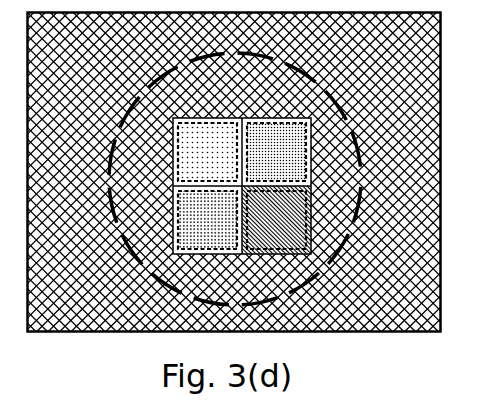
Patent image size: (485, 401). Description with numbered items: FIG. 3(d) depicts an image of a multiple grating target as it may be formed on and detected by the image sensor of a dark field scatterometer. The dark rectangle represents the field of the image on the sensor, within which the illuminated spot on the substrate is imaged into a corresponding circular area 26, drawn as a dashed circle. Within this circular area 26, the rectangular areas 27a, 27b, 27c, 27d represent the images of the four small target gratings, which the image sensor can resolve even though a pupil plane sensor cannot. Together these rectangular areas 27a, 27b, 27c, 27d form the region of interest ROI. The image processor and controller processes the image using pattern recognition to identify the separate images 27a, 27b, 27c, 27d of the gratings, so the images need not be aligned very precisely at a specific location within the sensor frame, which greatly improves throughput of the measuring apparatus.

The circular area 26 is at (158, 80).
The region of interest ROI is at (173, 166).
The rectangular area 27a is at (173, 147).
The rectangular area 27b is at (173, 237).
The rectangular area 27c is at (311, 228).
The rectangular area 27d is at (311, 152).